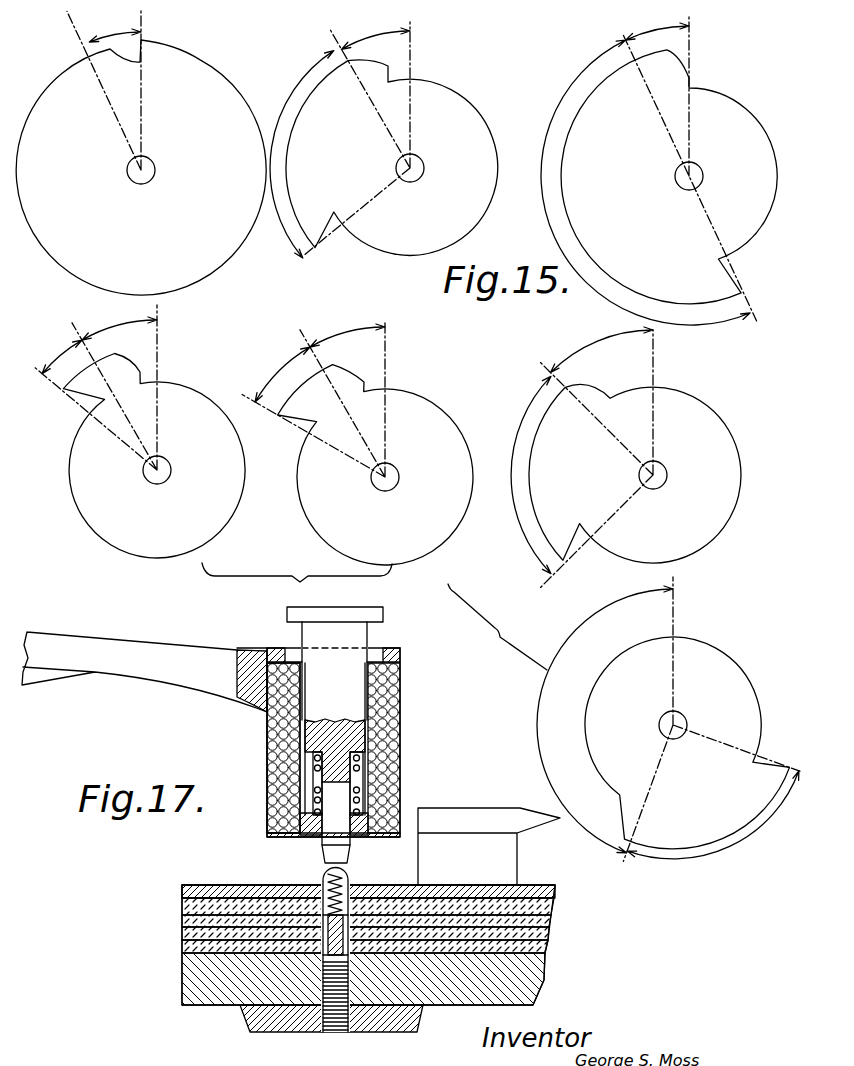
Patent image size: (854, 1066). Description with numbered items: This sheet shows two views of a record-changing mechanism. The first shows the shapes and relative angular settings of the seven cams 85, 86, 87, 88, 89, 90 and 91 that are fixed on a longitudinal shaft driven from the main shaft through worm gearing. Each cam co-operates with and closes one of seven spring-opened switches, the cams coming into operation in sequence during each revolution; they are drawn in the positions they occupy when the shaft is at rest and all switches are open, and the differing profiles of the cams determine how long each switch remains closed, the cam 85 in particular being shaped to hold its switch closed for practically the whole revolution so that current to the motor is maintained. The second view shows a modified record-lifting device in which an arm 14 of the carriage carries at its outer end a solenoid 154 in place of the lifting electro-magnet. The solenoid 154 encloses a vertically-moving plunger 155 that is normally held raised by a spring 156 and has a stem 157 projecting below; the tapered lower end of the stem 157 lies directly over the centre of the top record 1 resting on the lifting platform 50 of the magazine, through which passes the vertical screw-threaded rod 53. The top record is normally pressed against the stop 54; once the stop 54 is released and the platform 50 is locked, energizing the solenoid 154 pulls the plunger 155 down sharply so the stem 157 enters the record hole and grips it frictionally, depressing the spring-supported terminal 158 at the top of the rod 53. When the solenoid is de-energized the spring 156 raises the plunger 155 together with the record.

In FIG. 15, the cam 85 is at (198, 68).
In FIG. 15, the cam 88 is at (432, 92).
In FIG. 15, the cam 86 is at (707, 98).
In FIG. 15, the cam 89 is at (167, 392).
In FIG. 15, the cam 87 is at (312, 470).
In FIG. 15, the cam 90 is at (695, 418).
In FIG. 15, the cam 91 is at (738, 683).
In FIG. 17, the arm 14 is at (228, 660).
In FIG. 17, the solenoid 154 is at (267, 722).
In FIG. 17, the plunger 155 is at (398, 726).
In FIG. 17, the spring 156 is at (272, 786).
In FIG. 17, the stem 157 is at (335, 833).
In FIG. 17, the spring-supported terminal 158 is at (348, 870).
In FIG. 17, the record 1 is at (197, 885).
In FIG. 17, the lifting platform 50 is at (195, 963).
In FIG. 17, the screw-threaded rod 53 is at (330, 1032).
In FIG. 17, the stop 54 is at (500, 863).